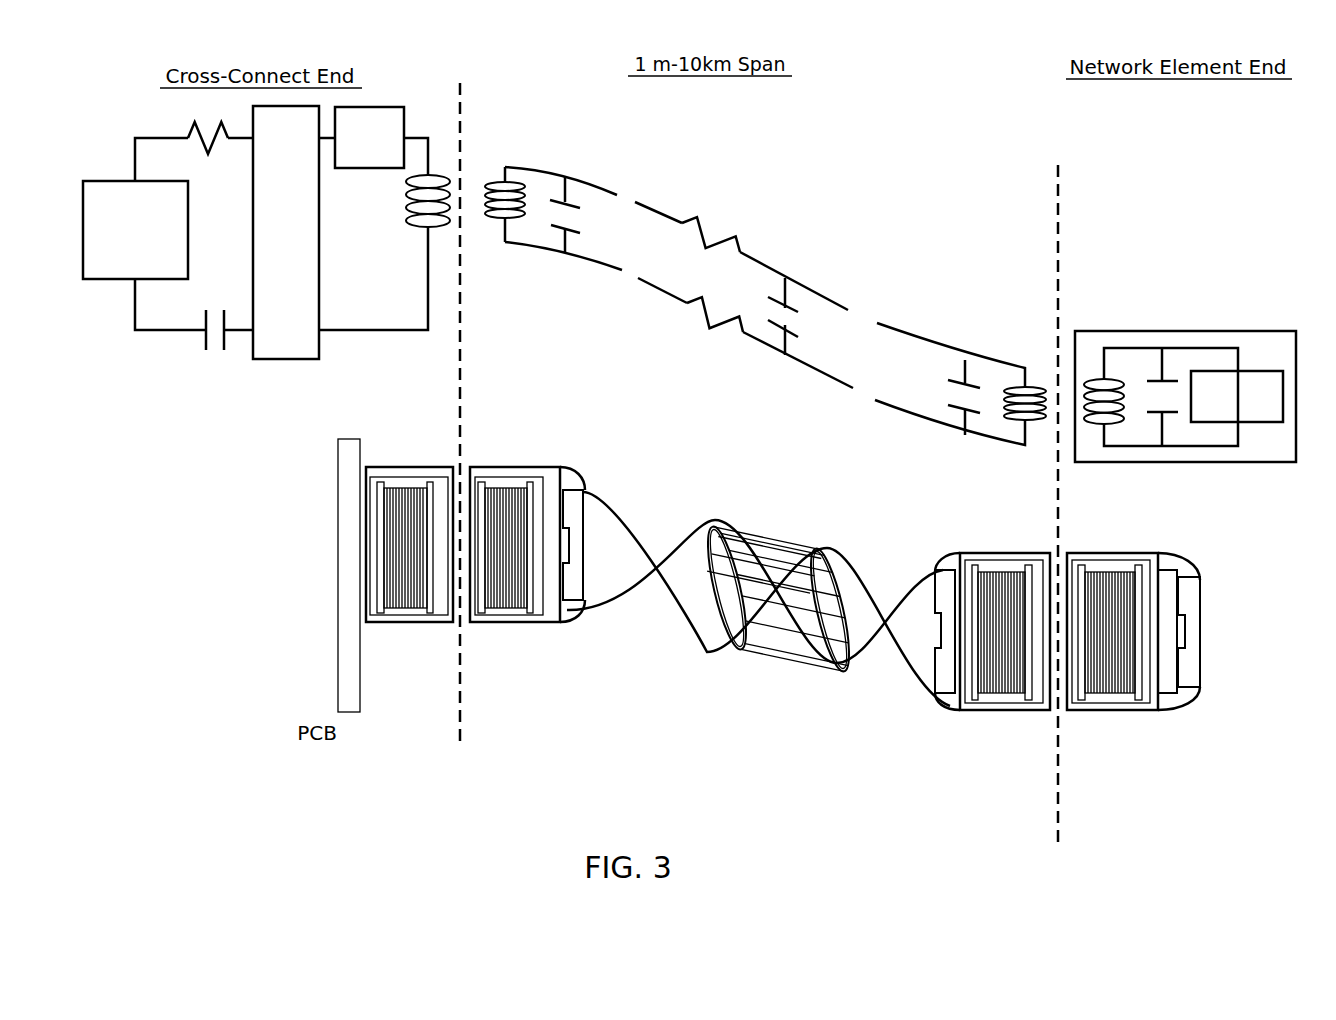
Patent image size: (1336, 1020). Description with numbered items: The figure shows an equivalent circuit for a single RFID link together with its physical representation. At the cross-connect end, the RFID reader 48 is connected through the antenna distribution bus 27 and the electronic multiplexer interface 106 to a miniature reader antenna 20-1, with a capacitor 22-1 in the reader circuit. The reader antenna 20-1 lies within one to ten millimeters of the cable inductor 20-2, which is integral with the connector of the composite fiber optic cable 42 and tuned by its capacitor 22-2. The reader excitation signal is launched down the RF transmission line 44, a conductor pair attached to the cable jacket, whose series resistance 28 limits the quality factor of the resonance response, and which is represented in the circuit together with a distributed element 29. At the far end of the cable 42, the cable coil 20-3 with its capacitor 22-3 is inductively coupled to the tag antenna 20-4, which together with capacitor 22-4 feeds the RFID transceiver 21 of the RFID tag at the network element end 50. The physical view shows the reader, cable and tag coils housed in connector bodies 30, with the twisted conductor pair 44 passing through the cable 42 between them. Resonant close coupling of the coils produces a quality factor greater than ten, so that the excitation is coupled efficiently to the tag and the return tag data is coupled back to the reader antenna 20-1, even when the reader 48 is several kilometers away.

The RFID reader 48 is at (135, 230).
The antenna distribution bus 27 is at (286, 232).
The electronic multiplexer interface 106 is at (369, 137).
The capacitor 22-1 is at (199, 340).
The capacitor 22-2 is at (587, 227).
The capacitor 22-3 is at (948, 392).
The capacitor 22-4 is at (1154, 373).
The reader antenna 20-1 is at (437, 170).
The cable inductor 20-2 is at (515, 223).
The cable coil 20-3 is at (1015, 425).
The tag antenna 20-4 is at (1117, 426).
The RF transmission line 44 is at (772, 267).
The series resistance 28 is at (732, 340).
The cable capacitance 29 is at (807, 323).
The RFID tag 50 is at (1197, 329).
The RFID transceiver 21 is at (1165, 593).
The connector housing 30 is at (570, 614).
The composite fiber optic cable 42 is at (768, 662).